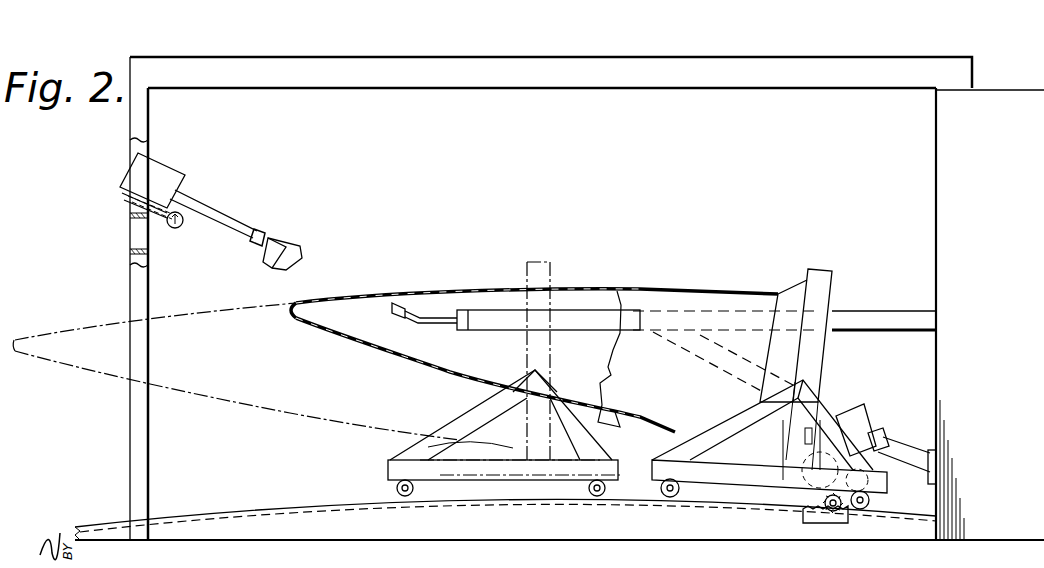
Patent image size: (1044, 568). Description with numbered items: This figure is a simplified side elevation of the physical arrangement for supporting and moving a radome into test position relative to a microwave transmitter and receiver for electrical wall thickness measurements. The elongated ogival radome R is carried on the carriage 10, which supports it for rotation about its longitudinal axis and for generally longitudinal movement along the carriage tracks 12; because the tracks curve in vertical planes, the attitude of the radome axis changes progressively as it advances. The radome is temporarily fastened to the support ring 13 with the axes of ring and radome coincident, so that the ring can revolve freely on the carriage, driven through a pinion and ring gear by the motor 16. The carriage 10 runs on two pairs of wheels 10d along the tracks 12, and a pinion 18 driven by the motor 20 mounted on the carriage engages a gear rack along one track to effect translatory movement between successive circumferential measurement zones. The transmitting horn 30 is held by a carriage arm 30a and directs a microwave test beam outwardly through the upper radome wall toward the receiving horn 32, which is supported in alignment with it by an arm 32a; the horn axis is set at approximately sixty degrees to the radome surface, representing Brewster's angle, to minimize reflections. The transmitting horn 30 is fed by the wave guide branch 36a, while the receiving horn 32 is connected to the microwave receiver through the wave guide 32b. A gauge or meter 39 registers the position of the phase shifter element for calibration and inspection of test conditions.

The carriage 10 is at (462, 417).
The wheels 10d is at (668, 498).
The carriage tracks 12 is at (245, 500).
The support ring 13 is at (804, 278).
The motor 16 is at (855, 424).
The pinion 18 is at (837, 524).
The motor 20 is at (888, 483).
The transmitting horn 30 is at (398, 303).
The carriage arm 30a is at (590, 302).
The receiving horn 32 is at (300, 245).
The arm 32a is at (244, 200).
The wave guide 32b is at (265, 230).
The wave guide branch 36a is at (432, 325).
The gauge or meter 39 is at (176, 228).
The radome R is at (350, 380).